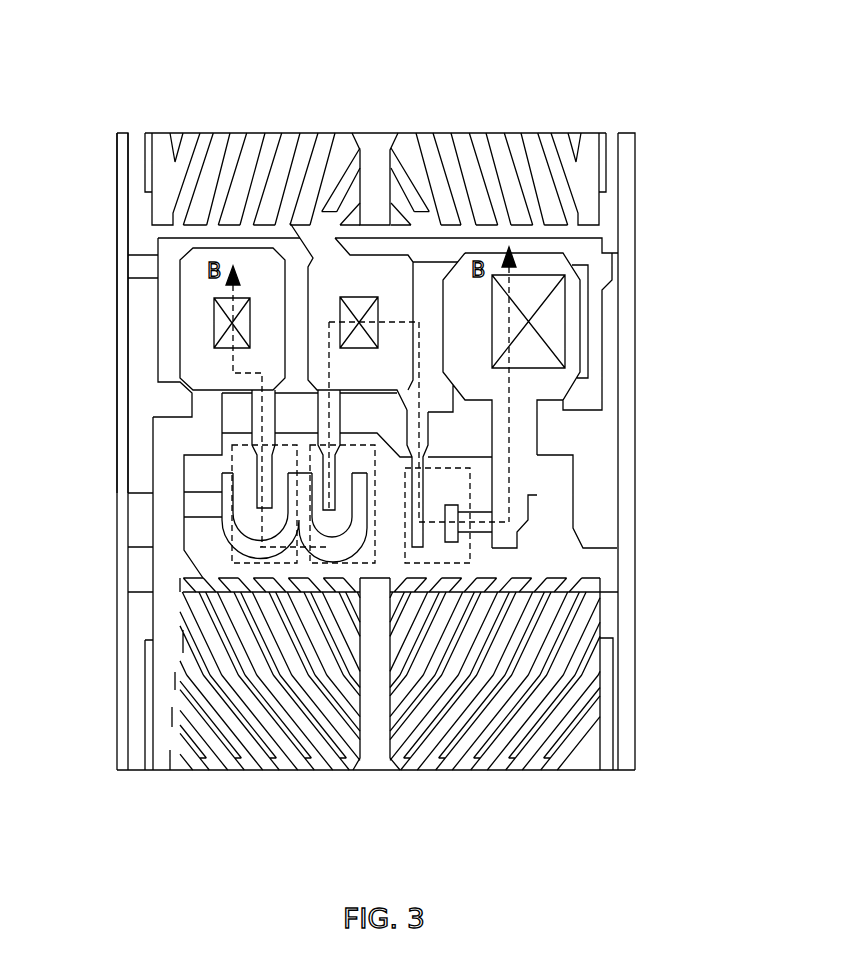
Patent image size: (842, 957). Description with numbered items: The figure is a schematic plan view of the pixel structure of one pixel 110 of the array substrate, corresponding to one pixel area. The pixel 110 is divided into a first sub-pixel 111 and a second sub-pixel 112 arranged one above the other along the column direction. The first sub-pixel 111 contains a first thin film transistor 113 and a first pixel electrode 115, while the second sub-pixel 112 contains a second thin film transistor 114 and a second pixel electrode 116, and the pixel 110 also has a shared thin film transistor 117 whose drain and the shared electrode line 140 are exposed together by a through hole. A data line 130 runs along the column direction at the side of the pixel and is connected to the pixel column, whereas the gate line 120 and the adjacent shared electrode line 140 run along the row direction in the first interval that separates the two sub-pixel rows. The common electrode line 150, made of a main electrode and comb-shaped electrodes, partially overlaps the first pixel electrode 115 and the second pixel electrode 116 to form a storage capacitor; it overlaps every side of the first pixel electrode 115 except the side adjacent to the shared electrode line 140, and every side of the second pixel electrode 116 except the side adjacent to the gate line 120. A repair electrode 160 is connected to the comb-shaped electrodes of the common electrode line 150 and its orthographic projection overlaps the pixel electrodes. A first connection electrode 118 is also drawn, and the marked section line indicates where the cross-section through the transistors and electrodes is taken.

The pixel 110 is at (147, 58).
The first sub-pixel 111 is at (667, 133).
The second sub-pixel 112 is at (673, 575).
The first thin film transistor 113 is at (298, 542).
The second thin film transistor 114 is at (232, 456).
The first pixel electrode 115 is at (376, 144).
The second pixel electrode 116 is at (367, 760).
The shared thin film transistor 117 is at (470, 492).
The first connection electrode 118 is at (570, 335).
The gate line 120 is at (555, 545).
The data line 130 is at (116, 172).
The shared electrode line 140 is at (160, 263).
The common electrode line 150 is at (148, 747).
The repair electrode 160 is at (148, 657).